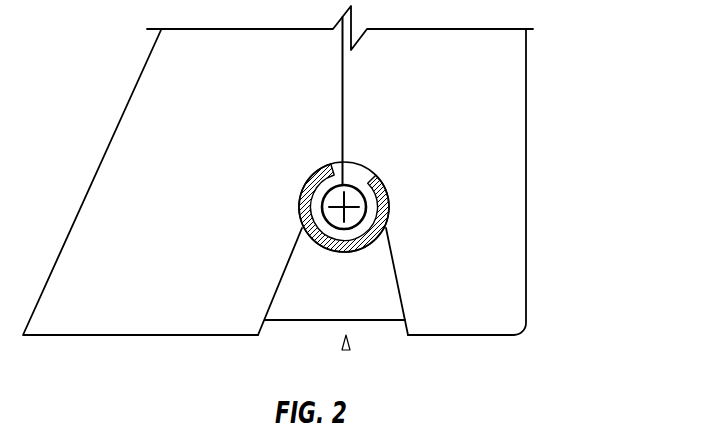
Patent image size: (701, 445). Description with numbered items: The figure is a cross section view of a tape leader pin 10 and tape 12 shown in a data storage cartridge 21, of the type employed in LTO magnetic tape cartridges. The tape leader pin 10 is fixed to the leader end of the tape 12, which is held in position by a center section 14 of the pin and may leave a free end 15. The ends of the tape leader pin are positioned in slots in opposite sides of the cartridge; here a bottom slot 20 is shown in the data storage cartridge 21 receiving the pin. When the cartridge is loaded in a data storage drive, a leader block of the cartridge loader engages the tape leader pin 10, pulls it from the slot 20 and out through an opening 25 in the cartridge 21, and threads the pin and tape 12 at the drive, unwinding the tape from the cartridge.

The tape leader pin 10 is at (337, 252).
The tape 12 is at (342, 93).
The center section 14 is at (350, 186).
The free end 15 is at (358, 186).
The bottom slot 20 is at (327, 306).
The data storage cartridge 21 is at (528, 213).
The opening 25 is at (346, 350).